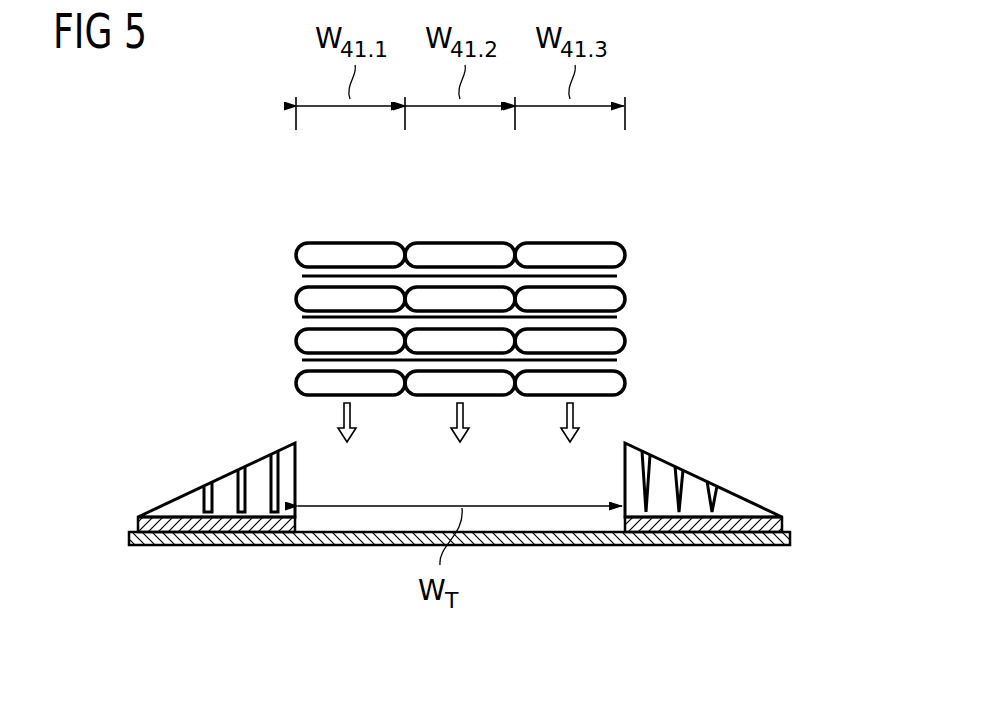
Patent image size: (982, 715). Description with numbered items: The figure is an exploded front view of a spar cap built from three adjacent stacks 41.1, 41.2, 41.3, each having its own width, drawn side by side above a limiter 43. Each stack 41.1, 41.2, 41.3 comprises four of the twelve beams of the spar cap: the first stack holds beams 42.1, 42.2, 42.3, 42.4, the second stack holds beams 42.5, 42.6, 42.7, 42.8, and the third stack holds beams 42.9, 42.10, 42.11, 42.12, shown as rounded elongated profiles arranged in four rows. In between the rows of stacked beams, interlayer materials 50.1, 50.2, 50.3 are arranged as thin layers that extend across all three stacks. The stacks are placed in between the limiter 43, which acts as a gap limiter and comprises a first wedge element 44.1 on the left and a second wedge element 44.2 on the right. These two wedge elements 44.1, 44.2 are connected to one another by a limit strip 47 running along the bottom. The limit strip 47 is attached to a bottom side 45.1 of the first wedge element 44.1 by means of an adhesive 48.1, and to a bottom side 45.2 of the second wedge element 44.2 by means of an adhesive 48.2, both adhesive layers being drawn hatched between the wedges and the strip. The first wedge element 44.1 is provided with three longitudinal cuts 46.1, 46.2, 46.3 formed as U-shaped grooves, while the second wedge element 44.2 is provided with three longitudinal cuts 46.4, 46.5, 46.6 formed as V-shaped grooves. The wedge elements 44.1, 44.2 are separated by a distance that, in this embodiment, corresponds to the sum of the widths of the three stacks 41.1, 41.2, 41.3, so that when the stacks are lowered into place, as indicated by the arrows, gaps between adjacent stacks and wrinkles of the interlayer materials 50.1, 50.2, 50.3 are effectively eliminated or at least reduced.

The stack 41.1 is at (348, 232).
The stack 41.2 is at (465, 232).
The stack 41.3 is at (582, 232).
The beam 42.1 is at (305, 255).
The beam 42.2 is at (305, 298).
The beam 42.3 is at (305, 340).
The beam 42.4 is at (383, 390).
The beam 42.5 is at (500, 250).
The beam 42.6 is at (423, 293).
The beam 42.7 is at (495, 345).
The beam 42.8 is at (437, 390).
The beam 42.9 is at (618, 255).
The beam 42.10 is at (620, 298).
The beam 42.11 is at (620, 340).
The beam 42.12 is at (605, 390).
The interlayer material 50.1 is at (617, 276).
The interlayer material 50.2 is at (617, 317).
The interlayer material 50.3 is at (617, 360).
The first wedge element 44.1 is at (206, 441).
The second wedge element 44.2 is at (736, 444).
The longitudinal cut 46.1 is at (207, 486).
The longitudinal cut 46.2 is at (241, 470).
The longitudinal cut 46.3 is at (274, 455).
The longitudinal cut 46.4 is at (646, 452).
The longitudinal cut 46.5 is at (679, 468).
The longitudinal cut 46.6 is at (712, 483).
The adhesive 48.1 is at (140, 526).
The adhesive 48.2 is at (782, 525).
The bottom side of the first wedge element 45.1 is at (222, 521).
The bottom side of the second wedge element 45.2 is at (688, 521).
The limit strip 47 is at (542, 546).
The limiter 43 is at (609, 588).